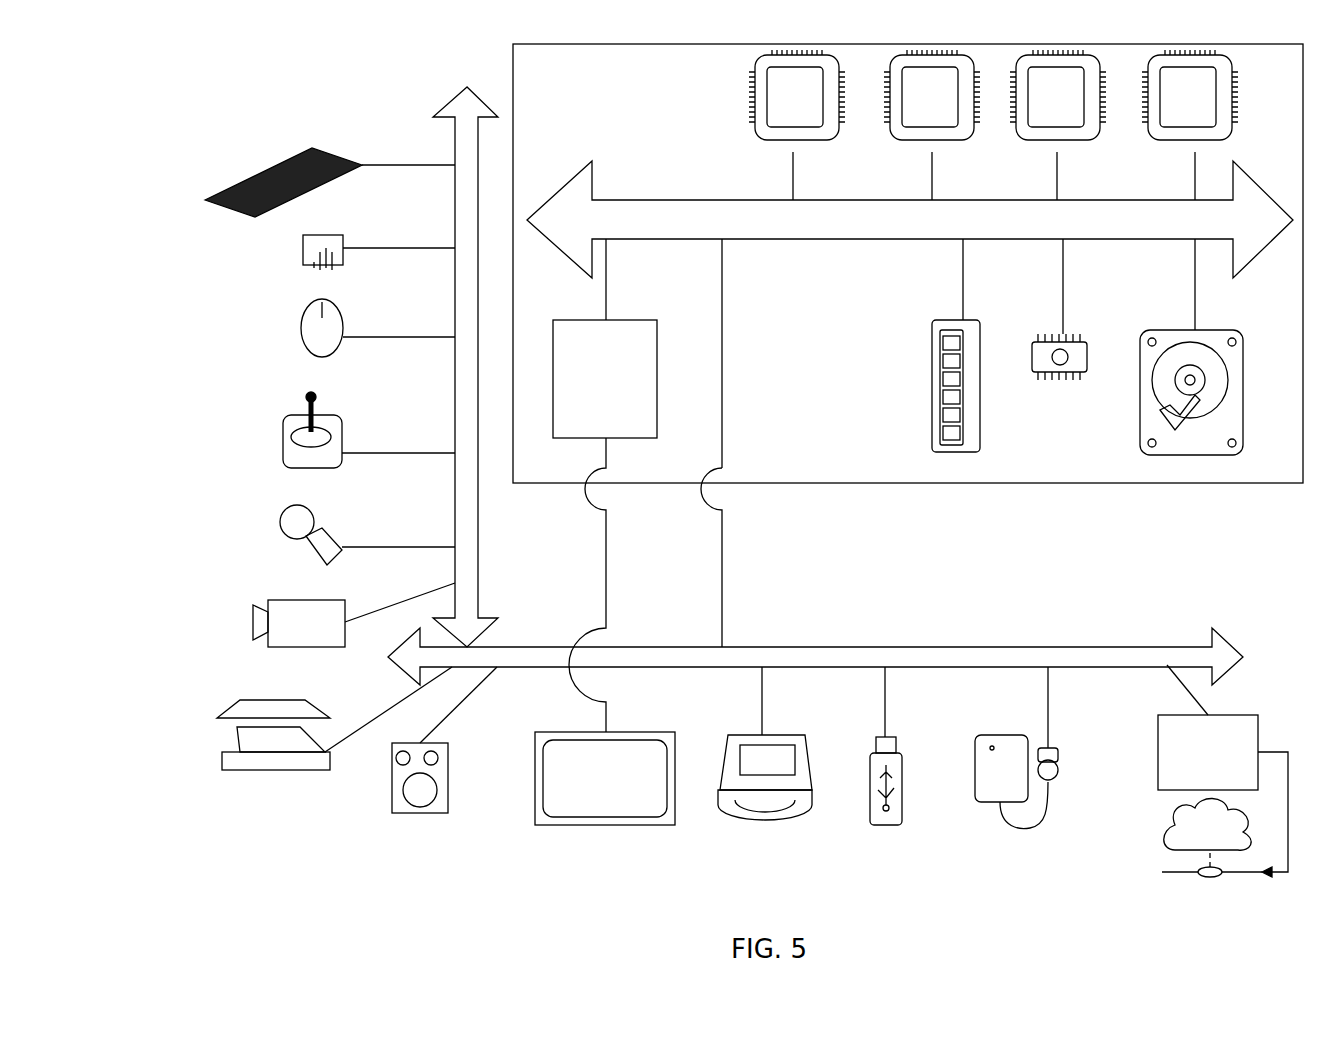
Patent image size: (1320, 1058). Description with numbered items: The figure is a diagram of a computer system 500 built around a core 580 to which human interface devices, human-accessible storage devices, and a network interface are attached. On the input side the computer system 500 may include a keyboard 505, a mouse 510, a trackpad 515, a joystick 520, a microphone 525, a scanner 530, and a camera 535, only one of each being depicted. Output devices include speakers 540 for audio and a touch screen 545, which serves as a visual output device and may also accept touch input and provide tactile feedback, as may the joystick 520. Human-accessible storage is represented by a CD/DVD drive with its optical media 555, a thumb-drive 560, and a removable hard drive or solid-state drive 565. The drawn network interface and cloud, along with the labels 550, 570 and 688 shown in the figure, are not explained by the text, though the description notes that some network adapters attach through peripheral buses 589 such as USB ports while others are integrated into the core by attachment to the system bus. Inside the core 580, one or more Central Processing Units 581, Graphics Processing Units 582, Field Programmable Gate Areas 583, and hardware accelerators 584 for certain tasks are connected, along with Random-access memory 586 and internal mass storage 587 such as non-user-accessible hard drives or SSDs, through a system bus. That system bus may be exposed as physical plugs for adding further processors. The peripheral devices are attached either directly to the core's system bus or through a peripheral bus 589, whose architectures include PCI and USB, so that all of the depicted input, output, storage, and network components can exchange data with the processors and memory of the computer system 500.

The computer system 500 is at (98, 124).
The keyboard 505 is at (302, 182).
The mouse 510 is at (295, 325).
The trackpad 515 is at (295, 260).
The joystick 520 is at (282, 455).
The microphone 525 is at (280, 520).
The scanner 530 is at (228, 748).
The camera 535 is at (255, 625).
The speakers 540 is at (420, 815).
The touch screen 545 is at (605, 827).
The printer 550 is at (800, 822).
The CD/DVD or the like media 555 is at (742, 825).
The thumb-drive 560 is at (886, 827).
The removable hard drive or solid-state drive 565 is at (973, 808).
The network 570 is at (1162, 840).
The core 580 is at (900, 483).
The Central Processing Unit 581 is at (699, 391).
The Graphics Processing Unit 582 is at (932, 95).
The Field Programmable Gate Area 583 is at (1055, 415).
The hardware accelerator 584 is at (1215, 463).
The Random-access memory 586 is at (930, 378).
The internal mass storage 587 is at (1146, 336).
The peripheral bus 589 is at (452, 112).
The system bus 688 is at (910, 399).